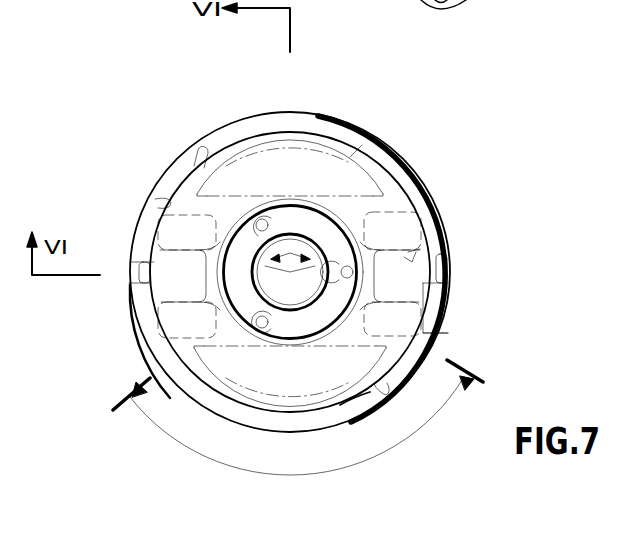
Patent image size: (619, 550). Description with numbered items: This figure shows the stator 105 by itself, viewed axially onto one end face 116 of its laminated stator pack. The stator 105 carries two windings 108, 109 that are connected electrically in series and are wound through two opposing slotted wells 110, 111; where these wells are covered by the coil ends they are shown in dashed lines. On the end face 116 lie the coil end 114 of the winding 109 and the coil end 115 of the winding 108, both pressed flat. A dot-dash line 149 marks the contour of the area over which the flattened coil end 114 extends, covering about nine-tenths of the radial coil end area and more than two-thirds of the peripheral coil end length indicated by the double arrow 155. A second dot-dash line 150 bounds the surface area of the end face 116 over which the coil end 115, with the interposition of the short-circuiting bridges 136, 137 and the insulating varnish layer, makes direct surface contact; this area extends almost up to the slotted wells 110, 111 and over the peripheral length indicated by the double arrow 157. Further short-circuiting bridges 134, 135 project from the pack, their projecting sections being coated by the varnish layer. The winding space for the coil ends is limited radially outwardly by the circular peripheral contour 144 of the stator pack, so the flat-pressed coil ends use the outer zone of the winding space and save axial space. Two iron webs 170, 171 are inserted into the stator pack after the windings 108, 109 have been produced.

The stator 105 is at (435, 194).
The winding 108 is at (356, 397).
The winding 109 is at (299, 132).
The slotted well 110 is at (450, 261).
The slotted well 111 is at (165, 284).
The coil end 114 is at (230, 143).
The coil end 115 is at (293, 403).
The end face 116 is at (420, 249).
The short-circuiting bridge 134 is at (192, 158).
The short-circuiting bridge 135 is at (157, 203).
The short-circuiting bridge 136 is at (447, 331).
The short-circuiting bridge 137 is at (386, 396).
The circular peripheral contour 144 is at (411, 158).
The dot-dash line 149 is at (350, 163).
The dot-dash line 150 is at (244, 389).
The double arrow 155 is at (290, 255).
The double arrow 157 is at (409, 436).
The iron web 170 is at (138, 272).
The iron web 171 is at (452, 270).